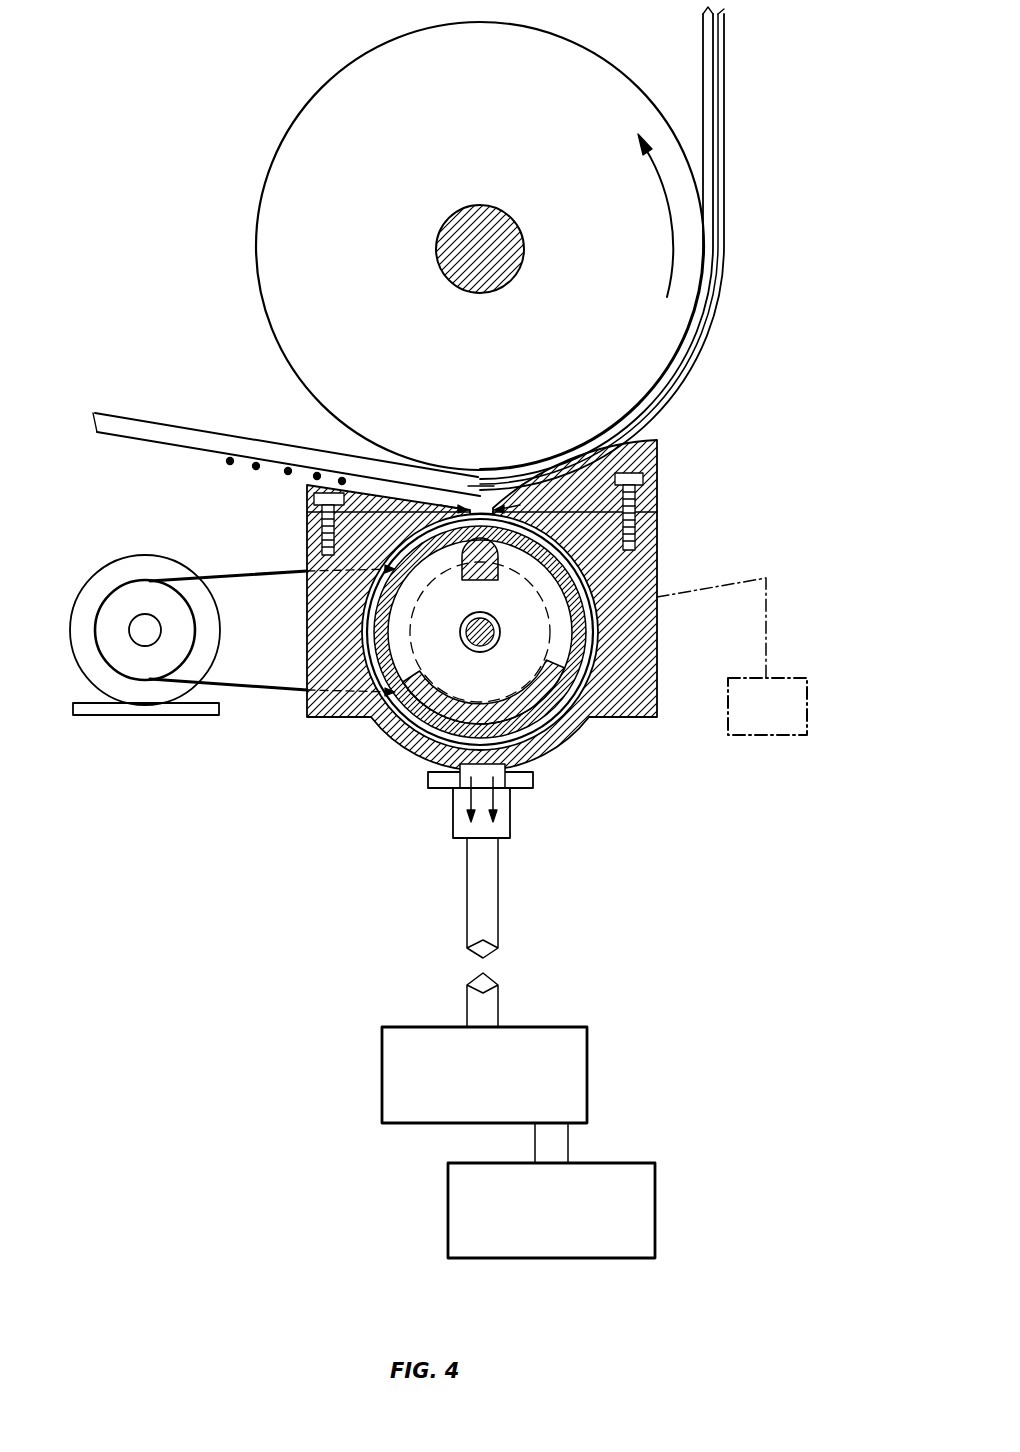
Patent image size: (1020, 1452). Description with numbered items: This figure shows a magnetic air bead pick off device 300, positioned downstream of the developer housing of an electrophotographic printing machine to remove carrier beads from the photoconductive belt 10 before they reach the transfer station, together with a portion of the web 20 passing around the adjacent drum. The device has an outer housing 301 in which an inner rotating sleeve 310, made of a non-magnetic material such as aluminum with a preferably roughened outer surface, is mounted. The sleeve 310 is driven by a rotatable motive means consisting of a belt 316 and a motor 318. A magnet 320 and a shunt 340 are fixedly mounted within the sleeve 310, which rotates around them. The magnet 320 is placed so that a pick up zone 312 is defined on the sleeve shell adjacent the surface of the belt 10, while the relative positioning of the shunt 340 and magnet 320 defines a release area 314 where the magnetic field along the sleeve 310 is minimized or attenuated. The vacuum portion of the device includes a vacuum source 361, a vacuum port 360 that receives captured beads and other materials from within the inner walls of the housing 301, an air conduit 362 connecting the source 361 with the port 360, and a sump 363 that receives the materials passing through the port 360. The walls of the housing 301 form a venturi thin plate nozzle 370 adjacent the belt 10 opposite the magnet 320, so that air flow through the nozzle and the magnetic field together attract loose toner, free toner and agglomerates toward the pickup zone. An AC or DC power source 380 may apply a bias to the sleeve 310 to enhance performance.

The belt 10 is at (118, 432).
The second web 20 is at (618, 372).
The magnetic air bead pick off device 300 is at (548, 605).
The outer housing 301 is at (657, 645).
The inner rotating sleeve 310 is at (587, 660).
The pick up zone 312 is at (486, 508).
The release area 314 is at (470, 750).
The belt 316 is at (268, 690).
The motor 318 is at (128, 692).
The magnet 320 is at (497, 578).
The shunt 340 is at (457, 697).
The vacuum port 360 is at (487, 788).
The vacuum source 361 is at (572, 1068).
The air conduit 362 is at (488, 908).
The sump 363 is at (623, 1245).
The venturi thin plate nozzle 370 is at (469, 500).
The AC or DC power source 380 is at (770, 722).